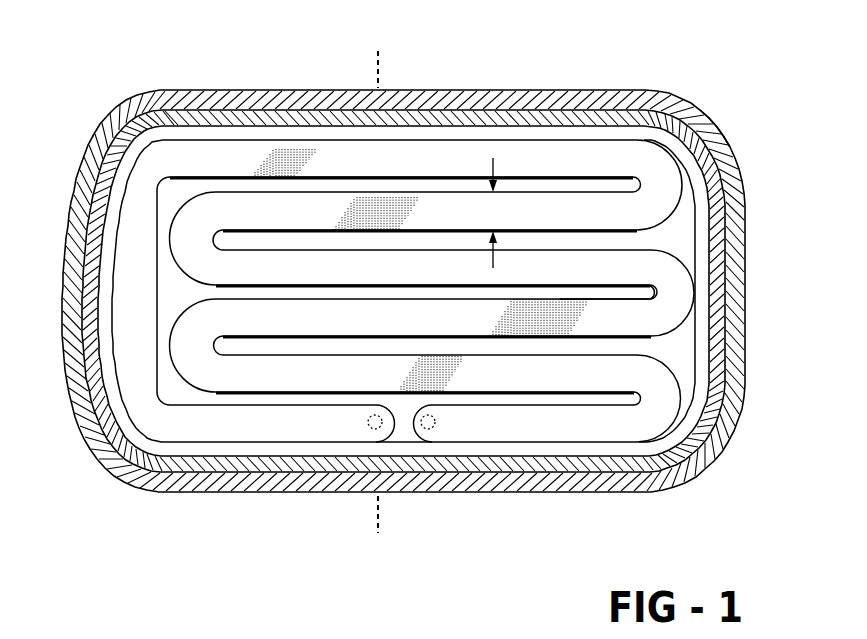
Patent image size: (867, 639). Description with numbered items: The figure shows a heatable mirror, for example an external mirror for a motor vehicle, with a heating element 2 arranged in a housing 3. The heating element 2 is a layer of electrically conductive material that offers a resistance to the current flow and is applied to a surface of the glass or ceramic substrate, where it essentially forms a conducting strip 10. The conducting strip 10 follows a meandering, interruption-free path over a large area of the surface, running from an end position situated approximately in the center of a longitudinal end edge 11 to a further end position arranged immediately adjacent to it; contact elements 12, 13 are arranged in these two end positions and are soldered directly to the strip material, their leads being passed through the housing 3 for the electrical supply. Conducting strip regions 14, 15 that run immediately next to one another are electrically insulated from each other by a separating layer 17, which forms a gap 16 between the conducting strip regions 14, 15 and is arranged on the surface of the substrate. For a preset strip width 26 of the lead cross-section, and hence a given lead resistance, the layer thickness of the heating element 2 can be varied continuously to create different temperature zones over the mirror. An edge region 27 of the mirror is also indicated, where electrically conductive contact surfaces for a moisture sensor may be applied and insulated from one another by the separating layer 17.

The heating element 2 is at (336, 533).
The housing 3 is at (717, 147).
The conducting strip 10 is at (258, 443).
The longitudinal end edge 11 is at (205, 494).
The contact element 12 is at (377, 427).
The contact element 13 is at (433, 422).
The conducting strip region 14 is at (592, 322).
The conducting strip region 15 is at (583, 257).
The gap 16 is at (649, 295).
The separating layer 17 is at (692, 348).
The strip width 26 is at (495, 160).
The edge region 27 is at (133, 435).